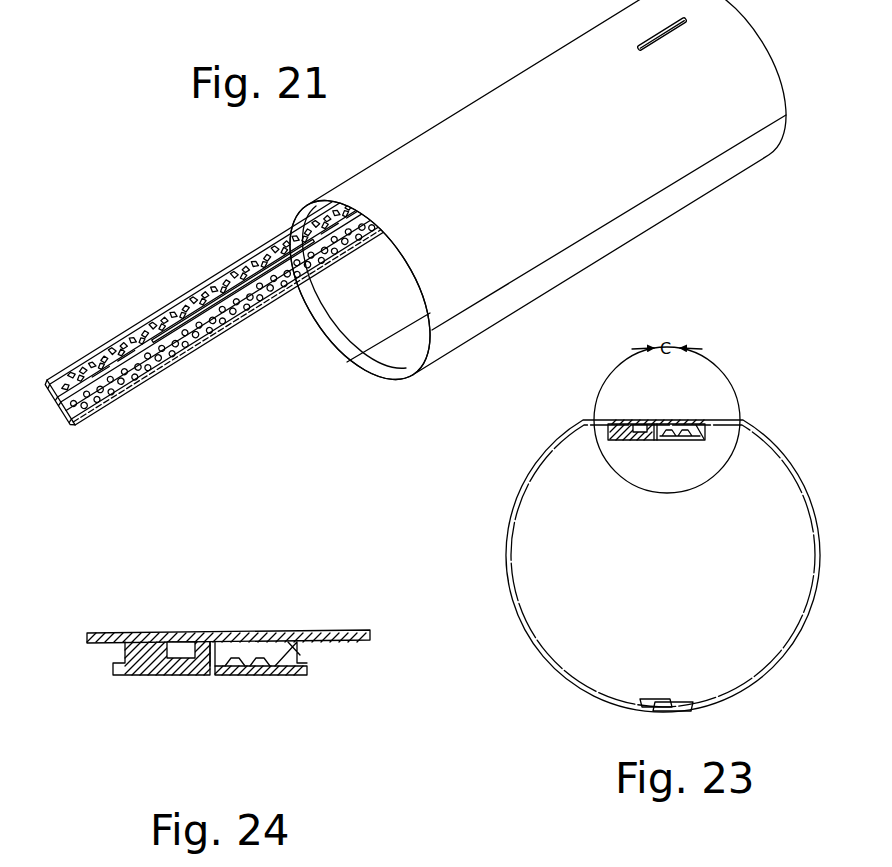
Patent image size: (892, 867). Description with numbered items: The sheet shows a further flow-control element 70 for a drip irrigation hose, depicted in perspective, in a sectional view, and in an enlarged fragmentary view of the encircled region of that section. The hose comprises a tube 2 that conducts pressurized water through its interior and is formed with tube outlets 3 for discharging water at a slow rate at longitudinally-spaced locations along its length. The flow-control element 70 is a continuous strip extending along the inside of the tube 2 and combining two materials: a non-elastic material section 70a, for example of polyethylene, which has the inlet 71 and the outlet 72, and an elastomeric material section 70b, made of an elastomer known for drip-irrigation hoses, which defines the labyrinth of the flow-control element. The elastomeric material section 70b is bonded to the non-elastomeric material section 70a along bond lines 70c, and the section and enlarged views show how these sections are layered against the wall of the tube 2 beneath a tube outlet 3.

In FIG. 23, the tube 2 is at (531, 470).
In FIG. 24, the tube 2 is at (334, 630).
In FIG. 23, the tube outlet 3 is at (667, 468).
In FIG. 24, the tube outlet 3 is at (219, 651).
In FIG. 21, the flow-control element 70 is at (214, 337).
In FIG. 21, the non-elastic material section 70a is at (78, 413).
In FIG. 23, the non-elastic material section 70a is at (693, 441).
In FIG. 24, the non-elastic material section 70a is at (290, 676).
In FIG. 21, the elastomeric material section 70b is at (70, 376).
In FIG. 23, the elastomeric material section 70b is at (618, 443).
In FIG. 24, the elastomeric material section 70b is at (145, 674).
In FIG. 21, the bond lines 70c is at (68, 395).
In FIG. 23, the bond lines 70c is at (652, 443).
In FIG. 24, the bond lines 70c is at (208, 675).
In FIG. 21, the inlet 71 is at (143, 368).
In FIG. 21, the outlet 72 is at (262, 293).